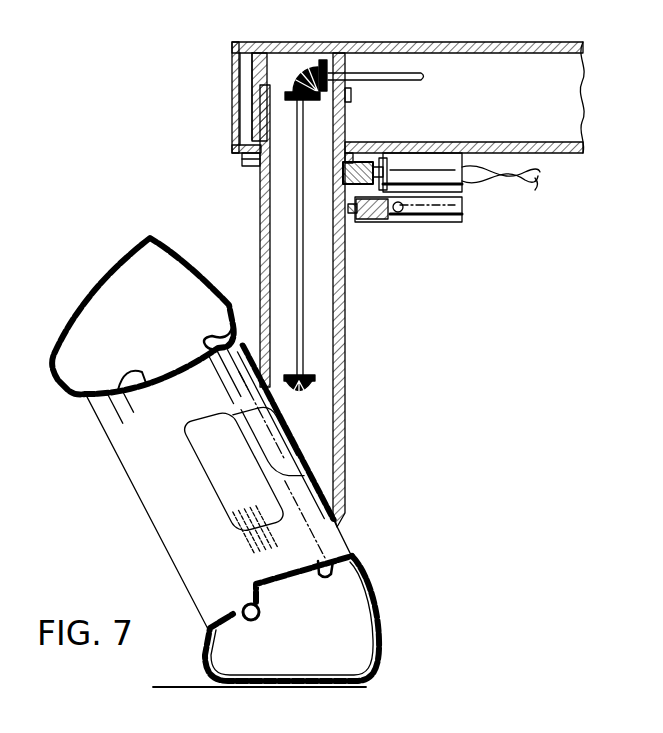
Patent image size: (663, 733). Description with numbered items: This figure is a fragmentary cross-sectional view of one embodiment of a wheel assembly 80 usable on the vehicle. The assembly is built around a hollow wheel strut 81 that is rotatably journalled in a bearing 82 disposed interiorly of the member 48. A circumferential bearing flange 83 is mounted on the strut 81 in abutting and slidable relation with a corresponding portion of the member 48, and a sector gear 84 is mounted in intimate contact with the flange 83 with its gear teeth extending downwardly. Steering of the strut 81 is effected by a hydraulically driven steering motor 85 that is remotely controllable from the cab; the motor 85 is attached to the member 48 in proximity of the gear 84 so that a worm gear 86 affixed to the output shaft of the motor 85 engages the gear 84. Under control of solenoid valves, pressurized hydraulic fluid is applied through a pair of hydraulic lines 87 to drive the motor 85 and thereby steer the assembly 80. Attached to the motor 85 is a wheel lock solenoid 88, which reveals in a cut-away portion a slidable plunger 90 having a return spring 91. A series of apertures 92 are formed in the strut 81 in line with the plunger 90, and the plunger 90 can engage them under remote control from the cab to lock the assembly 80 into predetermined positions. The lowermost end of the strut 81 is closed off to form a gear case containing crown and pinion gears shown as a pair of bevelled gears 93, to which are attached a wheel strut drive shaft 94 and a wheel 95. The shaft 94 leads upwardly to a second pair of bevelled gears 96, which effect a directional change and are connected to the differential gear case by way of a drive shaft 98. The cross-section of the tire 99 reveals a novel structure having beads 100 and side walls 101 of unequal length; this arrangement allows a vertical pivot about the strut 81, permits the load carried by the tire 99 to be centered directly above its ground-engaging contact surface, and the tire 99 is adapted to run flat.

The member 48 is at (429, 42).
The wheel assembly 80 is at (443, 290).
The hollow wheel strut 81 is at (346, 350).
The bearing 82 is at (352, 98).
The circumferential bearing flange 83 is at (243, 162).
The sector gear 84 is at (250, 171).
The steering motor 85 is at (430, 153).
The worm gear 86 is at (366, 161).
The hydraulic lines 87 is at (514, 186).
The wheel lock solenoid 88 is at (451, 223).
The slidable plunger 90 is at (403, 213).
The return spring 91 is at (378, 222).
The apertures 92 is at (345, 213).
The bevelled gears 93 is at (320, 383).
The wheel strut drive shaft 94 is at (297, 203).
The wheel 95 is at (396, 590).
The second pair of bevelled gears 96 is at (296, 66).
The drive shaft 98 is at (372, 70).
The tire 99 is at (382, 658).
The beads 100 is at (318, 565).
The side walls 101 is at (379, 616).